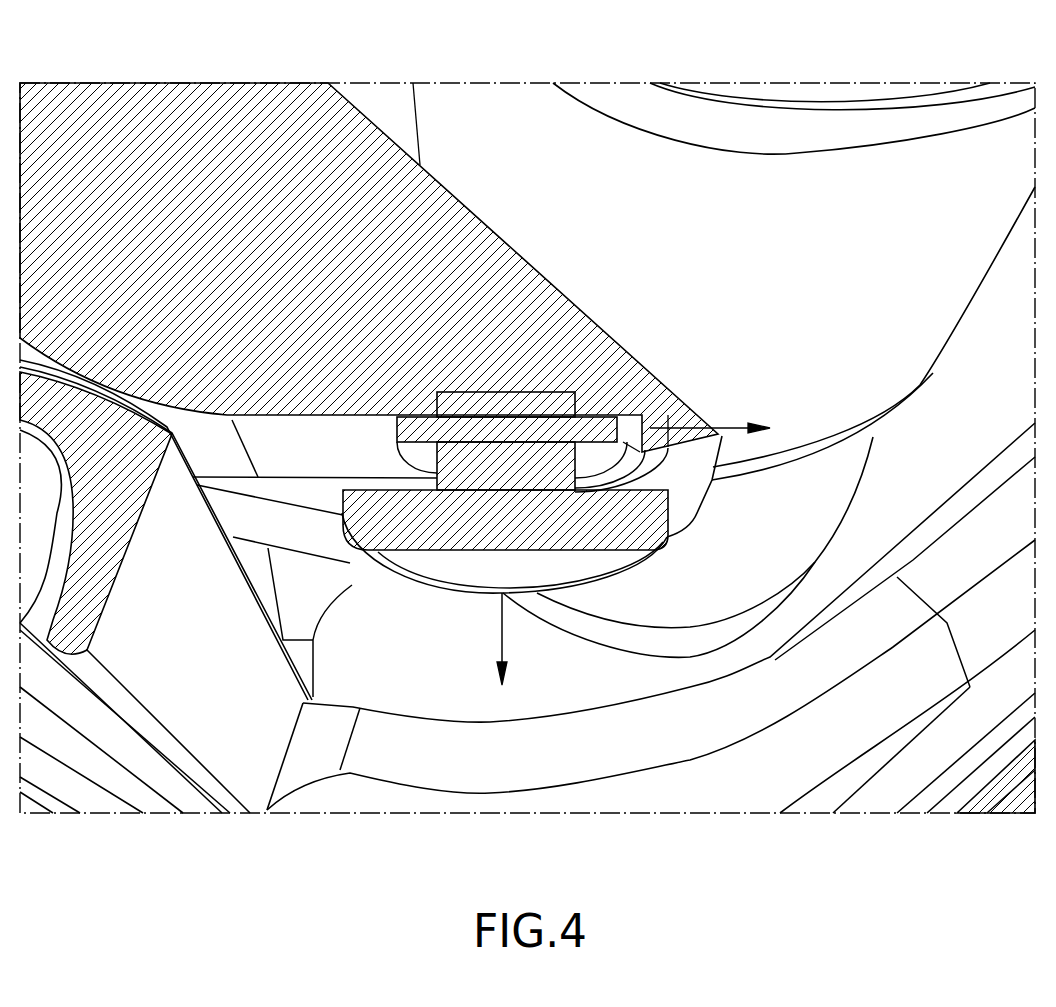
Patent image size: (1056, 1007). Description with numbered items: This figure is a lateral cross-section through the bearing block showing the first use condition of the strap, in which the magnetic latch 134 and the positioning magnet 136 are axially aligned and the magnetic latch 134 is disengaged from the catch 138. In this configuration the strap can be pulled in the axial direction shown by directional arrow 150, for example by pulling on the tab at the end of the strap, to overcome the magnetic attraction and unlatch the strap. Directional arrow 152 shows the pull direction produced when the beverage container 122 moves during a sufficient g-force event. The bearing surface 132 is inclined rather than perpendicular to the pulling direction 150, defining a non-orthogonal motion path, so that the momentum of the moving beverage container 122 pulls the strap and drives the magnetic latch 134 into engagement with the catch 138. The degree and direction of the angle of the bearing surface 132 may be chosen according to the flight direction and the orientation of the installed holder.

The beverage container 122 is at (730, 197).
The bearing surface 132 is at (383, 128).
The magnetic latch 134 is at (385, 522).
The positioning magnet 136 is at (550, 398).
The catch 138 is at (645, 415).
The directional arrow 150 is at (497, 633).
The directional arrow 152 is at (732, 428).